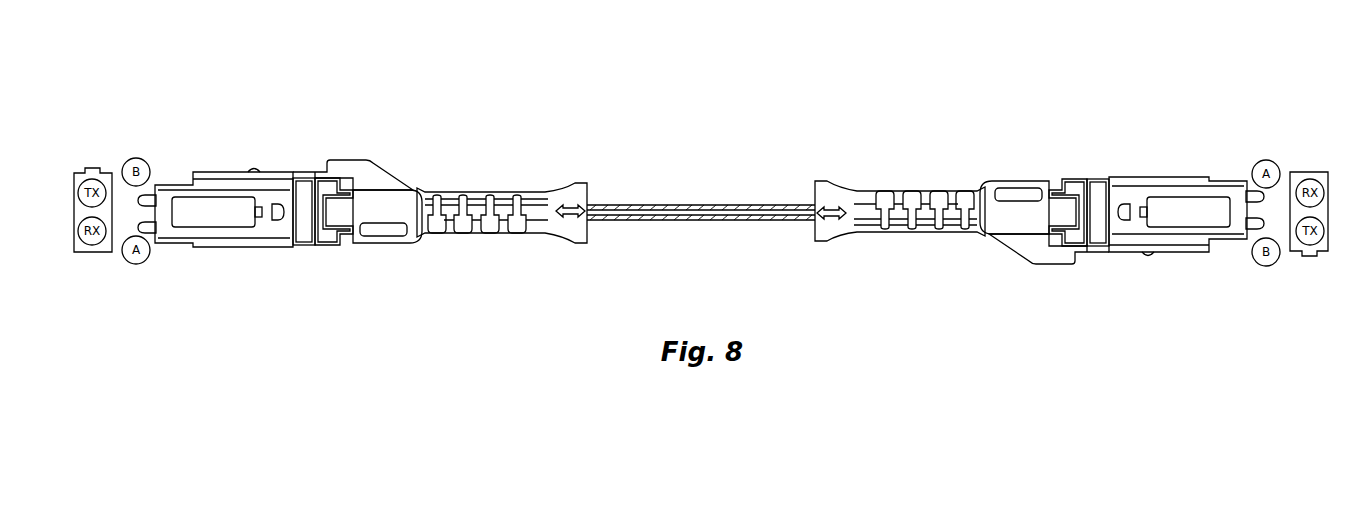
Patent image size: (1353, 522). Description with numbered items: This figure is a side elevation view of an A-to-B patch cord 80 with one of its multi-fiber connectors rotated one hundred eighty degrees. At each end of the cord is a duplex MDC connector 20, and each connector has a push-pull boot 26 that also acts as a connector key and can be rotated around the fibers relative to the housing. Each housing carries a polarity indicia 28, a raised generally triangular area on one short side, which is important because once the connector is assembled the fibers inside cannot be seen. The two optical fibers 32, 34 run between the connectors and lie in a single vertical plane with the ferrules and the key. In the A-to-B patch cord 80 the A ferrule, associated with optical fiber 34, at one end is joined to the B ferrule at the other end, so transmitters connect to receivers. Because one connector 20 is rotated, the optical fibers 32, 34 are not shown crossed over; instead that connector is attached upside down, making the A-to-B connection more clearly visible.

The duplex MDC connector 20 is at (331, 123).
The A-to-B patch cord 80 is at (1161, 101).
The polarity indicia 28 is at (181, 184).
The push-pull boot 26 is at (388, 174).
The optical fiber 32 is at (650, 205).
The optical fiber 34 is at (646, 221).